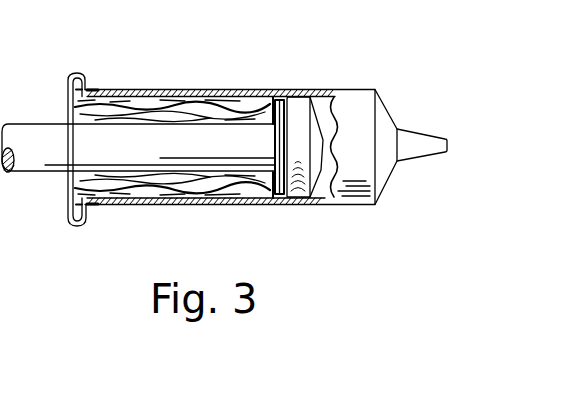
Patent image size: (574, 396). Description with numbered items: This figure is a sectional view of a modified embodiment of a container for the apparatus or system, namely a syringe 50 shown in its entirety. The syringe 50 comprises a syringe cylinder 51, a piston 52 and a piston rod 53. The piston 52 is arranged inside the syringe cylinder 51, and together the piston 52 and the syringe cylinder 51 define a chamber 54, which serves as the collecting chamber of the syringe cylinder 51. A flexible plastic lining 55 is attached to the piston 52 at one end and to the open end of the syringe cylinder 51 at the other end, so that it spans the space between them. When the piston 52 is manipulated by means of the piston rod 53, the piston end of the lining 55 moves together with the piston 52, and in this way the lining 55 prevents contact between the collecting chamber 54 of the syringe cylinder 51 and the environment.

The syringe 50 is at (220, 212).
The syringe cylinder 51 is at (213, 90).
The piston 52 is at (297, 100).
The piston rod 53 is at (33, 167).
The chamber 54 is at (328, 103).
The flexible plastic lining 55 is at (150, 108).